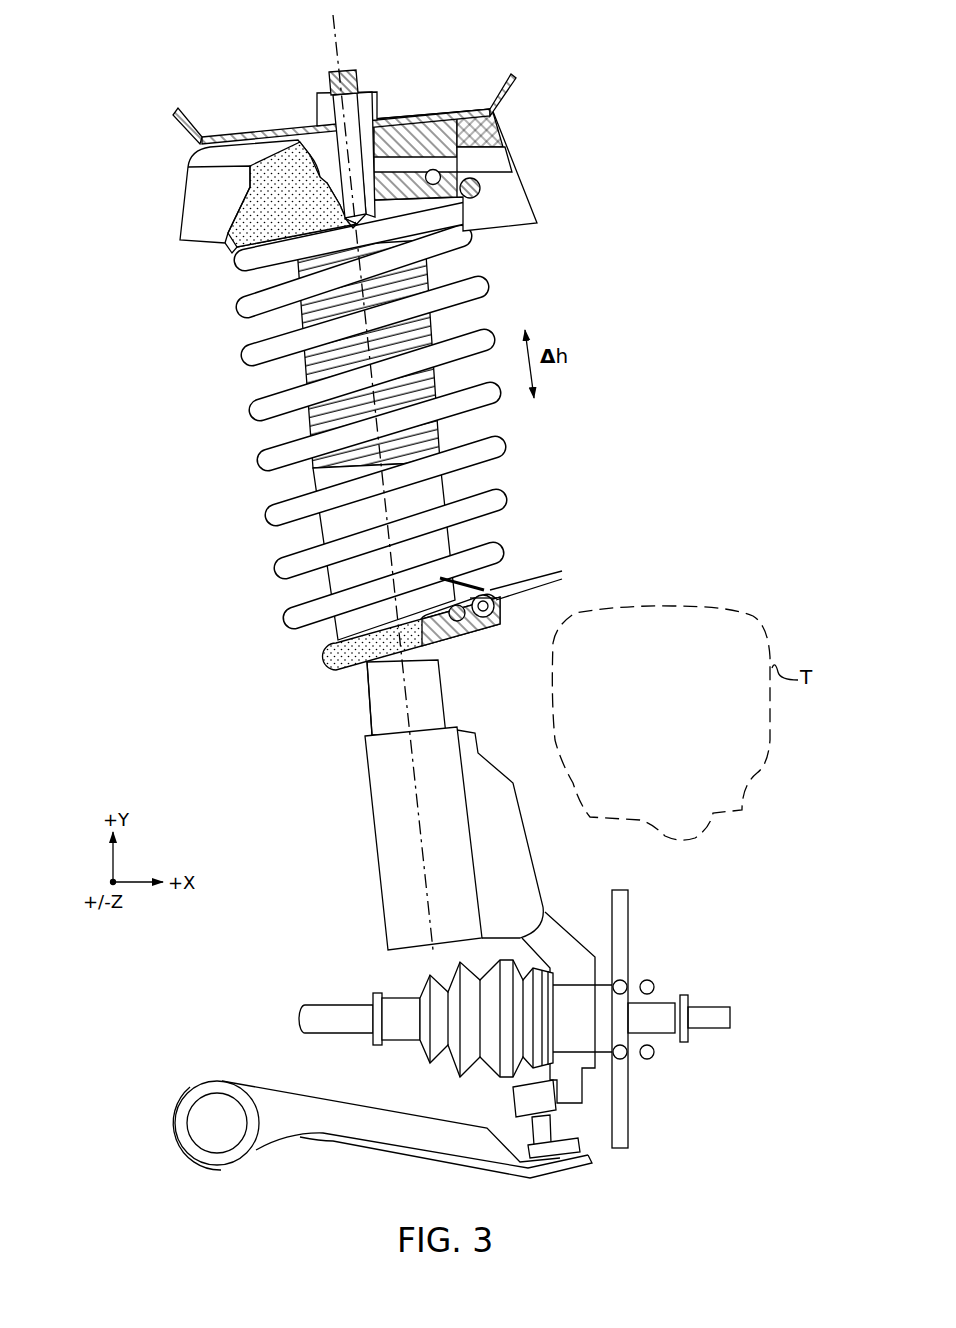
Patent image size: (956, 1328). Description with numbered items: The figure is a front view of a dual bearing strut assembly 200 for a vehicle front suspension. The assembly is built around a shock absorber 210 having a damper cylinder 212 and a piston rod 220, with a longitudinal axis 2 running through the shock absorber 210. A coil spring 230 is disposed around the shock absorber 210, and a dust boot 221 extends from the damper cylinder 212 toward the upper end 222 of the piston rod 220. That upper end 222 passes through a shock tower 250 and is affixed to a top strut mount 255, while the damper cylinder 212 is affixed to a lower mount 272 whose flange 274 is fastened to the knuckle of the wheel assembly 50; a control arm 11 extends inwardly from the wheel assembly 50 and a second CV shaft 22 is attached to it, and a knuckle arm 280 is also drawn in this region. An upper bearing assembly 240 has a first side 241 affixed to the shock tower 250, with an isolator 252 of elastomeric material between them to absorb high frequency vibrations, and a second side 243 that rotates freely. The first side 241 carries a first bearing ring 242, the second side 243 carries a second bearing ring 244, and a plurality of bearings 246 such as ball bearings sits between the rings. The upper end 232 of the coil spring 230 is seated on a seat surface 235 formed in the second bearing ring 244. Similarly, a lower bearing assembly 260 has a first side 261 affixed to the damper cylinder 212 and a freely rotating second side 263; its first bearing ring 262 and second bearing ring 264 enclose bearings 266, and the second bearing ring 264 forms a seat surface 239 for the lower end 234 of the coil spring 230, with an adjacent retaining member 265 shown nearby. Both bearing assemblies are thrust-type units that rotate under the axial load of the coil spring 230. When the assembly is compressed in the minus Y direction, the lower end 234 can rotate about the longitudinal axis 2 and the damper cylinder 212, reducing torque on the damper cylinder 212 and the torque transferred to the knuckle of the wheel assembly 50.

The longitudinal axis 2 is at (422, 836).
The control arm 11 is at (353, 1140).
The second CV shaft 22 is at (305, 1006).
The wheel assembly 50 is at (640, 1019).
The dual bearing strut assembly 200 is at (385, 580).
The shock absorber 210 is at (340, 440).
The damper cylinder 212 is at (433, 490).
The piston rod 220 is at (345, 110).
The dust boot 221 is at (430, 320).
The upper end 222 is at (357, 70).
The coil spring 230 is at (367, 412).
The upper end 232 is at (482, 190).
The lower end 234 is at (491, 600).
The seat surface 235 is at (462, 200).
The seat surface 239 is at (490, 606).
The upper bearing assembly 240 is at (515, 156).
The first side 241 is at (492, 166).
The first bearing ring 242 is at (403, 160).
The second side 243 is at (517, 173).
The second bearing ring 244 is at (446, 226).
The bearings 246 is at (437, 170).
The shock tower 250 is at (339, 128).
The isolator 252 is at (494, 113).
The top strut mount 255 is at (201, 85).
The lower bearing assembly 260 is at (359, 648).
The first side 261 is at (398, 693).
The first bearing ring 262 is at (444, 662).
The second side 263 is at (516, 594).
The second bearing ring 264 is at (480, 620).
The retaining plate 265 is at (574, 573).
The bearings 266 is at (458, 628).
The lower mount 272 is at (385, 845).
The flange 274 is at (518, 830).
The knuckle arm 280 is at (563, 940).